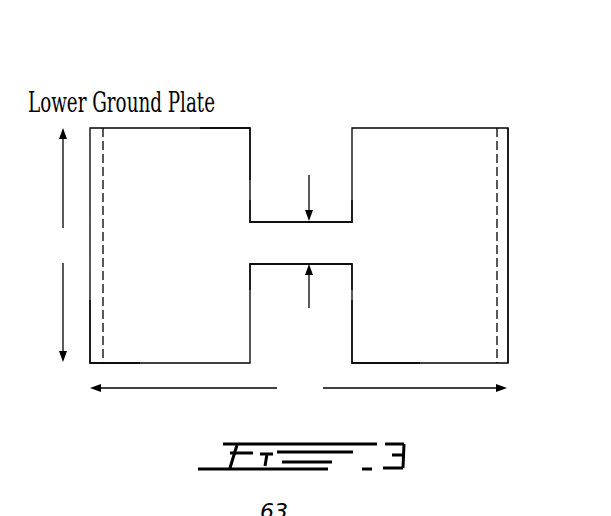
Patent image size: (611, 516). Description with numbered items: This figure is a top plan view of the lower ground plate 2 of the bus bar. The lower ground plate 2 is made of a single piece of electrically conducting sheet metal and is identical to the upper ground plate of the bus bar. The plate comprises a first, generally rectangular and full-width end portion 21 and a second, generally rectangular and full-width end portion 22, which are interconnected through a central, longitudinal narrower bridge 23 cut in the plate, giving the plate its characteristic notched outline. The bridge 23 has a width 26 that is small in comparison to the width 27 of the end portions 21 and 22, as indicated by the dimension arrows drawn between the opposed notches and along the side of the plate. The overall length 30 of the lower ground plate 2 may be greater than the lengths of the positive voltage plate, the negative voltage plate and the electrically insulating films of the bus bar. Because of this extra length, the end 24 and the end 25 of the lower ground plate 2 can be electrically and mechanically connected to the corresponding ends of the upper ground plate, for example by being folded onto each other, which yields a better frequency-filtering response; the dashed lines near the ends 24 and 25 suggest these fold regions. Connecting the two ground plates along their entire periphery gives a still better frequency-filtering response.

The lower ground plate 2 is at (340, 166).
The first end portion 21 is at (238, 141).
The second end portion 22 is at (368, 327).
The bridge 23 is at (271, 233).
The end of ground plate 24 is at (95, 355).
The end of ground plate 25 is at (503, 323).
The width of bridge 26 is at (301, 272).
The width of end portions 27 is at (62, 245).
The length of ground plate 30 is at (298, 390).